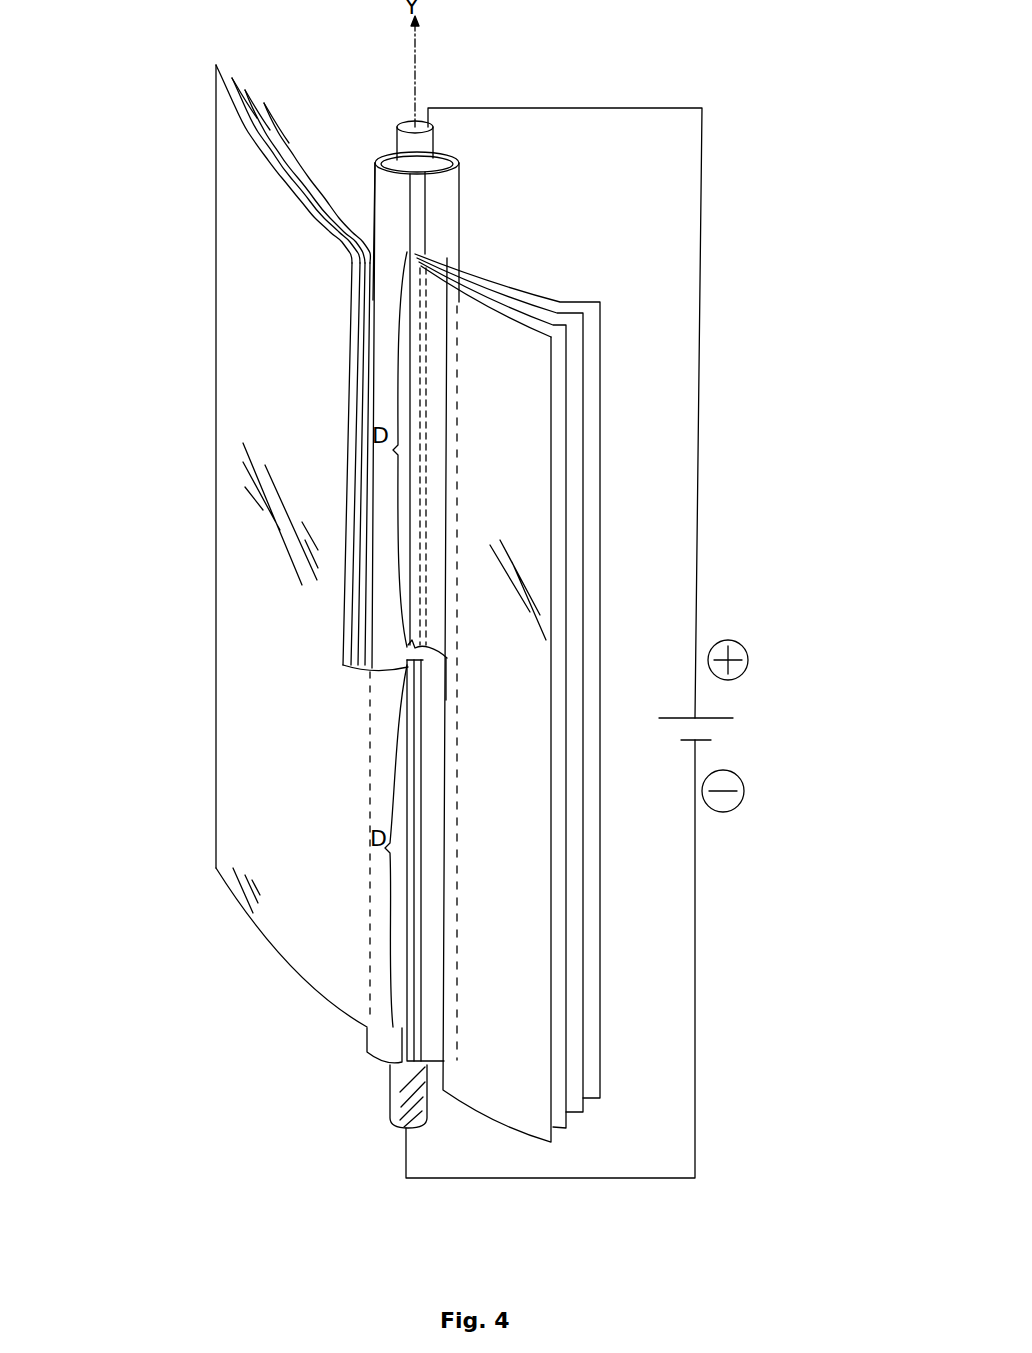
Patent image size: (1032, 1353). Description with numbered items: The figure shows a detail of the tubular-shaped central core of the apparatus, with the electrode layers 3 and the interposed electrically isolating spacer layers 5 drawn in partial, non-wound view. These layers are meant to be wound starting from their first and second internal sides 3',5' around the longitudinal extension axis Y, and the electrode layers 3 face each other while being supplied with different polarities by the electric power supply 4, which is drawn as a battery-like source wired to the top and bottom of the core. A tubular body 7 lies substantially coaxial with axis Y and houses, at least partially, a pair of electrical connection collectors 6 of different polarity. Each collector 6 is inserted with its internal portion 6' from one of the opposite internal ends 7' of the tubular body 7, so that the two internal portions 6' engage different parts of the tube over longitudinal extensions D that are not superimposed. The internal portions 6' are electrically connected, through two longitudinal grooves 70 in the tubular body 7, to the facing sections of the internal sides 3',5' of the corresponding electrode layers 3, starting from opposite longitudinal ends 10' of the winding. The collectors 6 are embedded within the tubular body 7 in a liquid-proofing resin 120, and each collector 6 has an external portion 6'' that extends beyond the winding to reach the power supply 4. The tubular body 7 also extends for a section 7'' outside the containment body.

The electrode layers 3 is at (479, 573).
The electrically isolating spacer layers 5 is at (232, 77).
The first and second internal sides 3',5' is at (253, 467).
The tubular body 7 is at (393, 605).
The internal ends of the tubular body 7' is at (329, 878).
The section outside the containment body 7'' is at (419, 579).
The electrical connection collectors 6 is at (397, 388).
The internal portion of the collector 6' is at (267, 821).
The external portion of the collector 6'' is at (364, 620).
The longitudinal grooves 70 is at (383, 1079).
The liquid-proofing resin 120 is at (442, 156).
The longitudinal ends of the spiral-like winding 10' is at (602, 682).
The electric power supply 4 is at (774, 677).